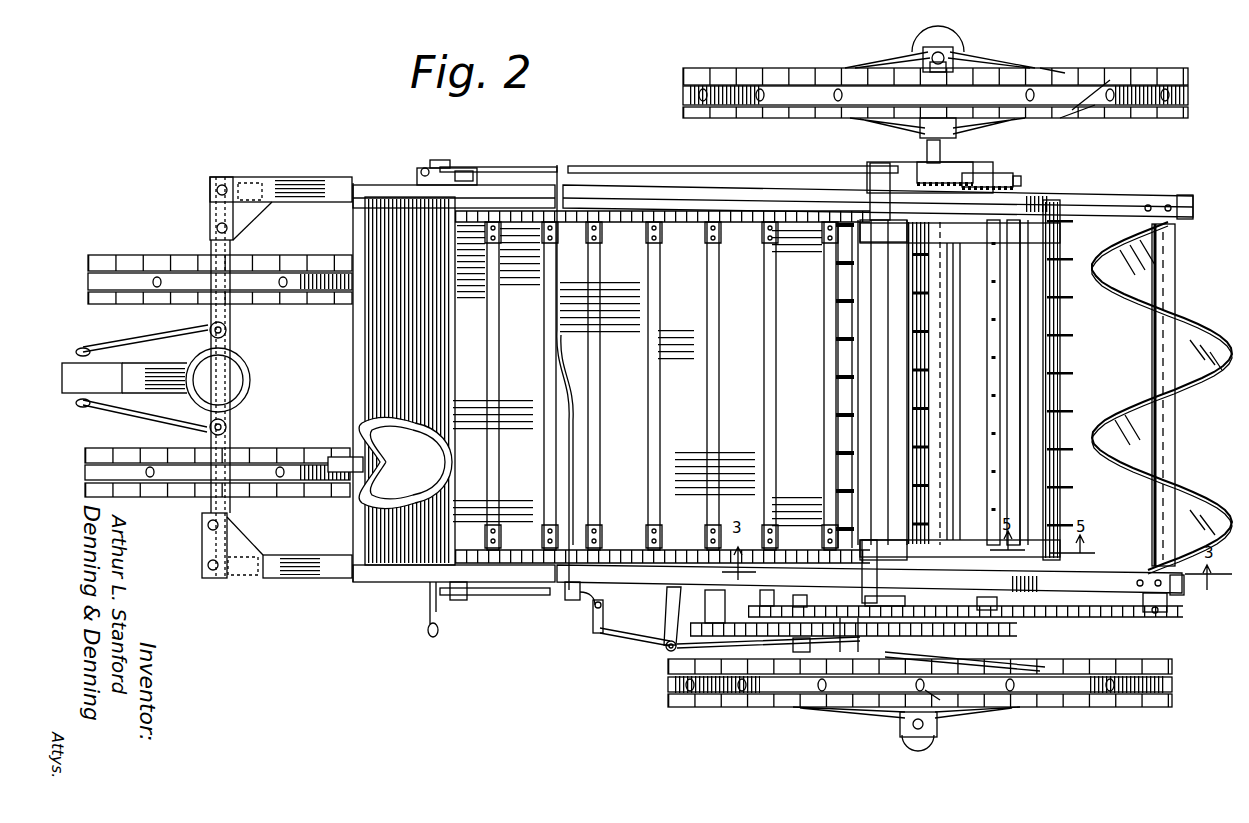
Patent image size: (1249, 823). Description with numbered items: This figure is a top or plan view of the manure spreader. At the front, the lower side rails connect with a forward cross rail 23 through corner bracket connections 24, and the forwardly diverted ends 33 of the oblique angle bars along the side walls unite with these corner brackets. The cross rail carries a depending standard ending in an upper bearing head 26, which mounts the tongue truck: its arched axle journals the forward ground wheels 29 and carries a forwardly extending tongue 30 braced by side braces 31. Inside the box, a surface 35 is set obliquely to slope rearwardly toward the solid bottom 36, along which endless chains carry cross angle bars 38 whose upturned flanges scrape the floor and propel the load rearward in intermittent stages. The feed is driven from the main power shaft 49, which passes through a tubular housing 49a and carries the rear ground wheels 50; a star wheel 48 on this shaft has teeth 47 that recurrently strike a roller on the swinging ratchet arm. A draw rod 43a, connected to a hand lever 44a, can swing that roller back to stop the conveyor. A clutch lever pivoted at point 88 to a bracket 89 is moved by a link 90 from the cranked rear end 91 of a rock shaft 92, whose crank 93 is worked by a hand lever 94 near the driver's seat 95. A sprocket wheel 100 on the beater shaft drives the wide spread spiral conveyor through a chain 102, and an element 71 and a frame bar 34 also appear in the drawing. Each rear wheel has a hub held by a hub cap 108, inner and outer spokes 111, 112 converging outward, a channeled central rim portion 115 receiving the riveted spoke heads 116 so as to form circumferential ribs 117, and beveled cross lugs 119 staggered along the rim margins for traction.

The forward cross rail 23 is at (216, 466).
The corner bracket connections 24 is at (236, 546).
The upper bearing head 26 is at (252, 373).
The forward ground wheels 29 is at (143, 262).
The tongue 30 is at (135, 372).
The side braces 31 is at (120, 412).
The forward ends of angle bars 33 is at (318, 188).
The frame rail 34 is at (1088, 200).
The obliquely set surface 35 is at (395, 379).
The solid bottom 36 is at (650, 386).
The cross angle bars 38 is at (713, 406).
The draw rod 43a is at (520, 167).
The hand lever 44a is at (442, 165).
The teeth of star wheel 47 is at (972, 175).
The star wheel 48 is at (945, 172).
The shaft 49 is at (924, 147).
The tubular housing 49a is at (932, 357).
The rear ground wheels 50 is at (826, 70).
The sprocket 71 is at (842, 632).
The pivot point 88 is at (667, 651).
The bracket 89 is at (672, 619).
The link 90 is at (595, 618).
The cranked rear end 91 is at (598, 604).
The rock shaft 92 is at (528, 598).
The crank 93 is at (444, 602).
The hand lever 94 is at (425, 627).
The driver's seat 95 is at (390, 463).
The sprocket wheel 100 is at (764, 597).
The chain 102 is at (1063, 625).
The hub cap 108 is at (948, 40).
The inner spokes 111 is at (995, 657).
The outer spokes 112 is at (990, 67).
The central portion of rim 115 is at (684, 97).
The heads of spokes 116 is at (1115, 106).
The circumferentially extending ribs 117 is at (1110, 80).
The beveled cross lugs 119 is at (1065, 73).